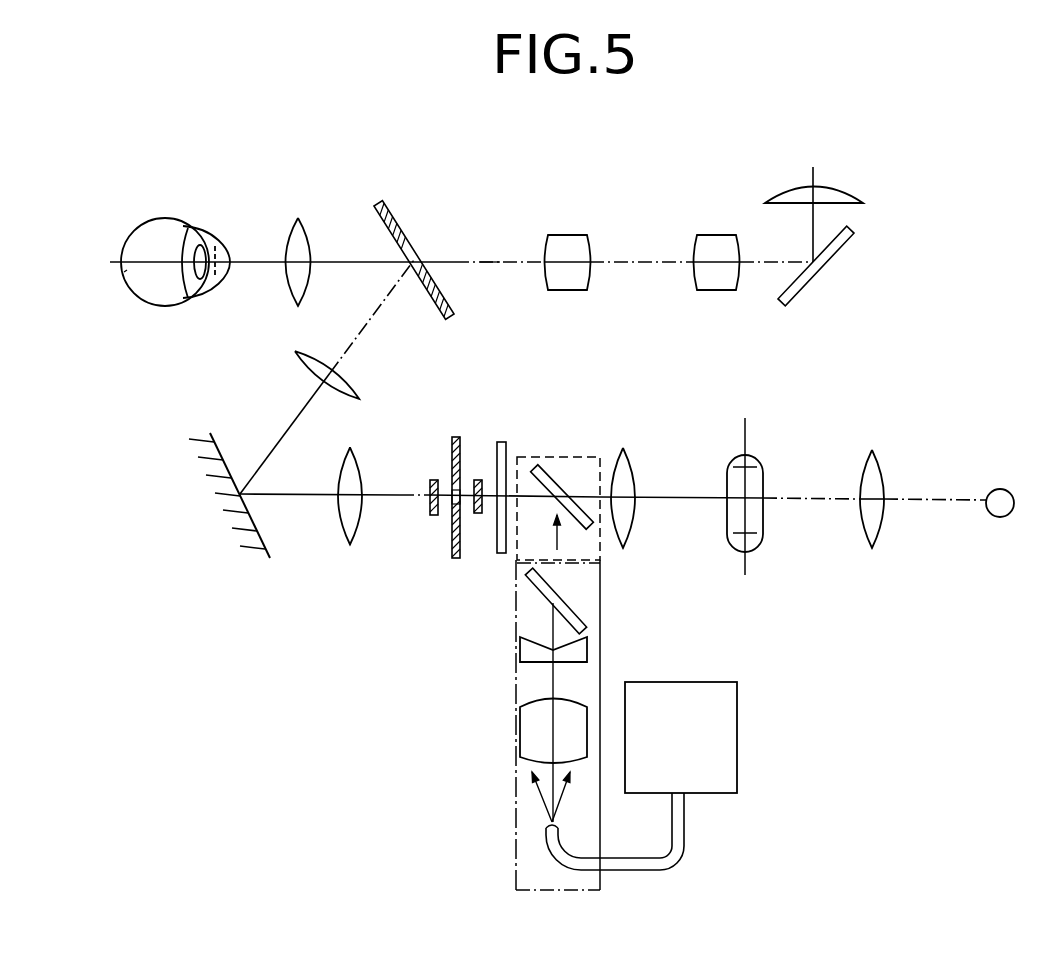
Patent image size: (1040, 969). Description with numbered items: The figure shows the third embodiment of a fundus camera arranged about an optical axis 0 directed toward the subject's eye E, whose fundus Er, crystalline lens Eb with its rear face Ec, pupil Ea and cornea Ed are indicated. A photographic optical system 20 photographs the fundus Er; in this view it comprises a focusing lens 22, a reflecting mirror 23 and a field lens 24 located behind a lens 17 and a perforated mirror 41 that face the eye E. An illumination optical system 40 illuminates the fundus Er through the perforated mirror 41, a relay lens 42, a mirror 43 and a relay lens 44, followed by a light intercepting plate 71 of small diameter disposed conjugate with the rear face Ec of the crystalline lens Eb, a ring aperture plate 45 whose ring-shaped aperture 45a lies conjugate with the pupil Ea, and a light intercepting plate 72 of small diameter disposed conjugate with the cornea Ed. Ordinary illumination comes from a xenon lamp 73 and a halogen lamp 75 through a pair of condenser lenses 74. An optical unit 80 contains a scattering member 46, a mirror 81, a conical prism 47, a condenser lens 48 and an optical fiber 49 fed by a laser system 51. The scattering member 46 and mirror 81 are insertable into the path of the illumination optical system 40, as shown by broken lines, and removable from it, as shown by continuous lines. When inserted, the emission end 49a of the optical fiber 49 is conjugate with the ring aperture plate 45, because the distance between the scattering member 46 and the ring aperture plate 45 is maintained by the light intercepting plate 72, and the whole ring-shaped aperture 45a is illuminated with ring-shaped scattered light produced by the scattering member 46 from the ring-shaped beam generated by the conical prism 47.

The eye E is at (148, 310).
The pupil Ea is at (221, 240).
The crystalline lens Eb is at (190, 300).
The rear face of crystalline lens Ec is at (188, 226).
The cornea Ed is at (228, 262).
The fundus Er is at (127, 270).
The optical axis 0 is at (490, 262).
The objective lens 17 is at (305, 222).
The photographic optical system 20 is at (721, 259).
The focusing lens 22 is at (747, 225).
The reflecting mirror 23 is at (836, 250).
The field lens 24 is at (858, 197).
The illumination optical system 40 is at (706, 645).
The perforated mirror 41 is at (401, 228).
The relay lens 42 is at (365, 385).
The mirror 43 is at (222, 497).
The relay lens 44 is at (338, 528).
The ring aperture plate 45 is at (452, 437).
The ring-shaped aperture 45a is at (456, 530).
The scattering member 46 is at (508, 442).
The conical prism 47 is at (588, 650).
The condenser lens 48 is at (520, 720).
The optical fiber 49 is at (690, 846).
The emission end 49a is at (543, 826).
The laser system 51 is at (740, 742).
The light intercepting plate 71 is at (430, 512).
The light intercepting plate 72 is at (478, 480).
The xenon lamp 73 is at (763, 535).
The condenser lens 74 is at (632, 465).
The halogen lamp 75 is at (1002, 490).
The optical unit 80 is at (524, 725).
The mirror 81 is at (562, 487).